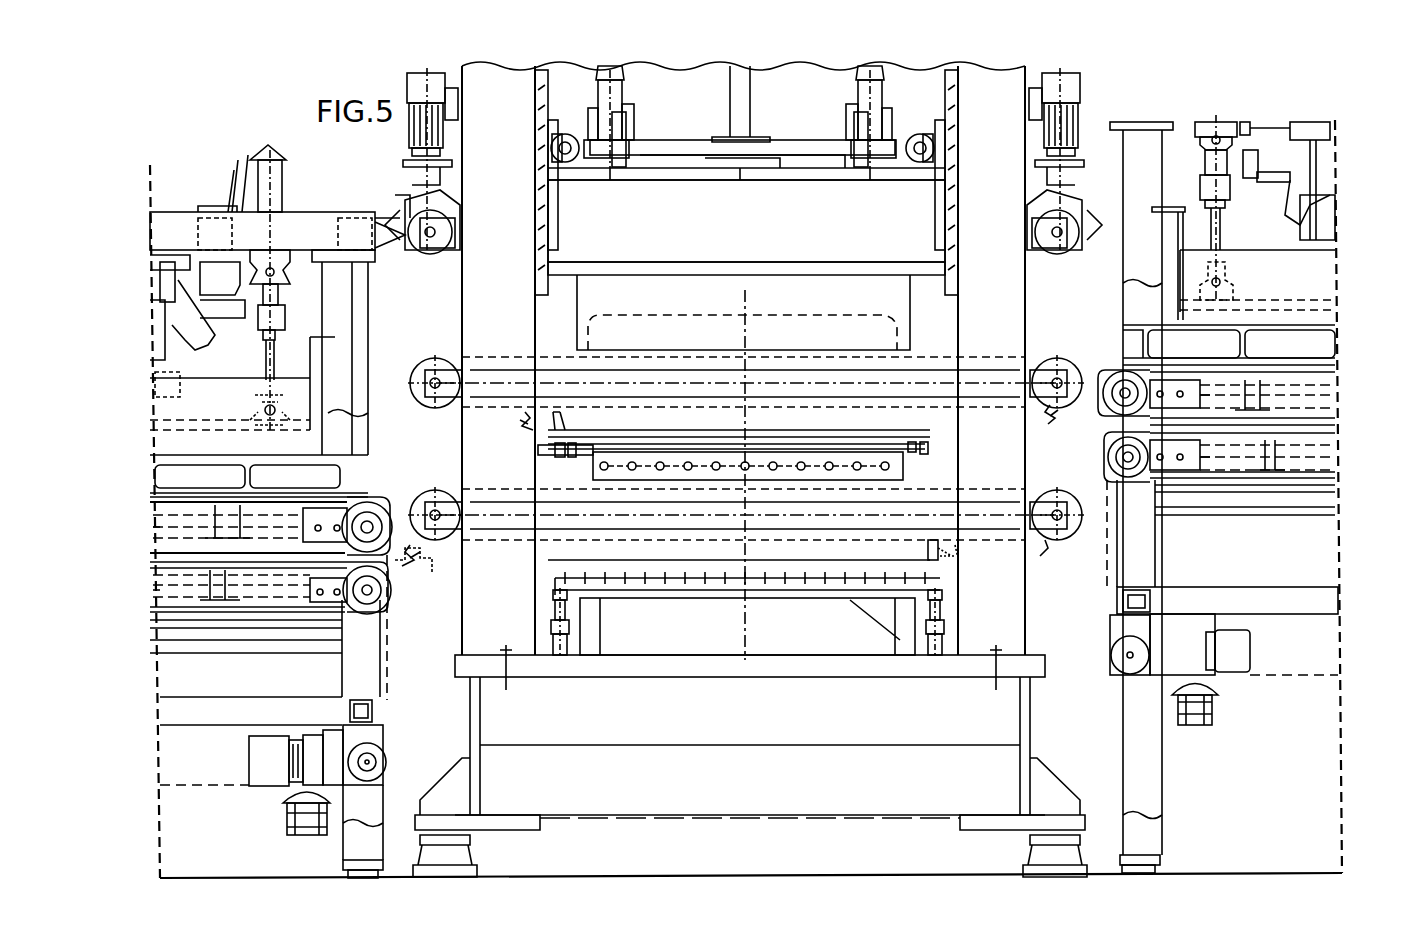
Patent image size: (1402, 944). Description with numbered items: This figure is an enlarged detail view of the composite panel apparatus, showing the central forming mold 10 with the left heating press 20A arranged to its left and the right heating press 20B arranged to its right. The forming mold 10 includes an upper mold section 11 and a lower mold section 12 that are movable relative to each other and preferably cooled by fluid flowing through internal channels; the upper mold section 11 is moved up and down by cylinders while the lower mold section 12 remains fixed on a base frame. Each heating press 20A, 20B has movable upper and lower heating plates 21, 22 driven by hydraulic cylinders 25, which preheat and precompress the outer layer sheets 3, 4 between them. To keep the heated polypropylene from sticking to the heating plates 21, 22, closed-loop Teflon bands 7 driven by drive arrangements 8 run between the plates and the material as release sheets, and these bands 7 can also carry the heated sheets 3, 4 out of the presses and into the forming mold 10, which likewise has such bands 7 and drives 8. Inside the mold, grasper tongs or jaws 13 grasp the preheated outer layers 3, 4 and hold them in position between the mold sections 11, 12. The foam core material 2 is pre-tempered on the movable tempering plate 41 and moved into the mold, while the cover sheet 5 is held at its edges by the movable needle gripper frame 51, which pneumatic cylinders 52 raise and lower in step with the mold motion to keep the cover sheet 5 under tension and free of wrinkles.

The forming mold 10 is at (706, 28).
The upper mold section 11 is at (812, 292).
The lower mold section 12 is at (755, 605).
The grasper tongs or jaws 13 is at (730, 509).
The foam core material 2 is at (935, 448).
The outer layer material sheet 3 is at (920, 560).
The outer layer material sheet 4 is at (905, 430).
The pre-tempering plate 41 is at (595, 465).
The cover sheet 5 is at (930, 582).
The movable needle gripper frame 51 is at (875, 612).
The pneumatic cylinders 52 is at (553, 612).
The Teflon bands 7 is at (512, 368).
The drive arrangements 8 is at (425, 80).
The left heating press 20A is at (198, 152).
The right heating press 20B is at (1204, 78).
The upper heating plate 21 is at (140, 524).
The lower heating plate 22 is at (140, 591).
The hydraulic cylinders 25 is at (278, 192).